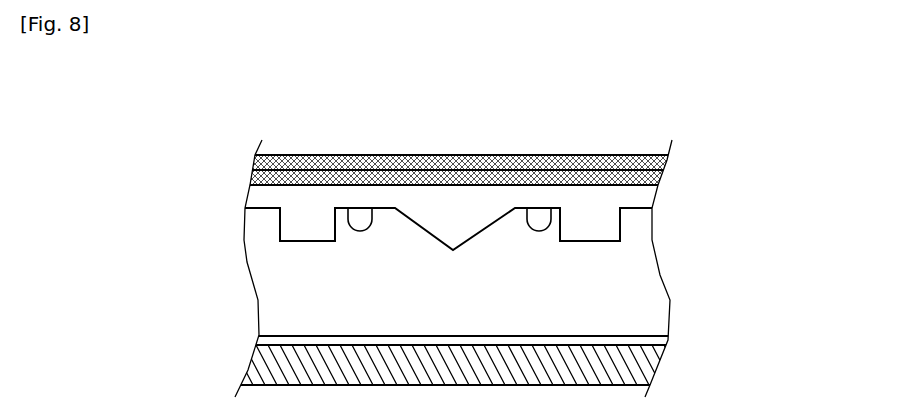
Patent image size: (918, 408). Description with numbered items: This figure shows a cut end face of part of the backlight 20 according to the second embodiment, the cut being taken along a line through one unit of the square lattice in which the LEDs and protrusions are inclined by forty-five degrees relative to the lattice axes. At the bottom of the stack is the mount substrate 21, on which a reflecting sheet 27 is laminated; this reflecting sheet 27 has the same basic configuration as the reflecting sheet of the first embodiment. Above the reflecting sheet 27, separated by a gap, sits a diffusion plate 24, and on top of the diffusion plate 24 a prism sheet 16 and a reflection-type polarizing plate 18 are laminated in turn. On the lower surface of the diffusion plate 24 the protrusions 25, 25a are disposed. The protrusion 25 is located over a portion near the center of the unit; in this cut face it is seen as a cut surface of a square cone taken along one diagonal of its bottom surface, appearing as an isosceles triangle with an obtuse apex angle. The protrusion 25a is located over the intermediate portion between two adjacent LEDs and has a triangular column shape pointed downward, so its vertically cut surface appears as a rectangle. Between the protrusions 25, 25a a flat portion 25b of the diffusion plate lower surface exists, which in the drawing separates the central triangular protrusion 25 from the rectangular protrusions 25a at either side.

The backlight 20 is at (694, 138).
The reflection-type polarizing plate 18 is at (667, 160).
The prism sheet 16 is at (663, 173).
The diffusion plate 24 is at (263, 198).
The protrusion 25 is at (446, 249).
The protrusion 25a is at (280, 240).
The flat portion 25b is at (357, 209).
The reflecting sheet 27 is at (668, 340).
The mount substrate 21 is at (247, 369).